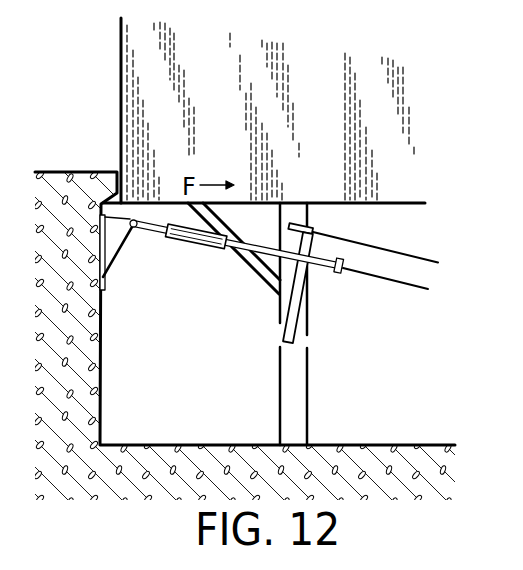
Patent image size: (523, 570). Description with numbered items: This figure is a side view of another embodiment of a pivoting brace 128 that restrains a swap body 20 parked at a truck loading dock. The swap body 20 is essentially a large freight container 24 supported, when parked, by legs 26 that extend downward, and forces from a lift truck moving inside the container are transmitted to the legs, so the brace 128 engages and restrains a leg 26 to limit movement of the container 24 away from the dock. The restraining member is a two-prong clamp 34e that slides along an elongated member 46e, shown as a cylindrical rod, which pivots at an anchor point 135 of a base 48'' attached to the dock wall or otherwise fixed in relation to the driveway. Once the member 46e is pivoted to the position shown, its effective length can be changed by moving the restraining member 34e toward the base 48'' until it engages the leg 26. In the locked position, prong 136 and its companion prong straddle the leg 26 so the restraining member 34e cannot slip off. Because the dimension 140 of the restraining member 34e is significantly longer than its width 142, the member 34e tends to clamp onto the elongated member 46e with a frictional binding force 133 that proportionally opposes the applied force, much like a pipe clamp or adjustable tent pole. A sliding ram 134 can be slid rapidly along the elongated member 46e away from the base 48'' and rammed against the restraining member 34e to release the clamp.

The swap body 20 is at (93, 84).
The container 24 is at (120, 137).
The leg 26 is at (279, 411).
The restraining member 34e is at (313, 232).
The elongated member 46e is at (253, 279).
The pivoting brace 128 is at (240, 257).
The frictional binding force 133 is at (271, 240).
The sliding ram 134 is at (202, 248).
The anchor point 135 is at (126, 229).
The prong 136 is at (290, 228).
The dimension 140 is at (430, 222).
The width 142 is at (247, 327).
The base 48'' is at (149, 260).